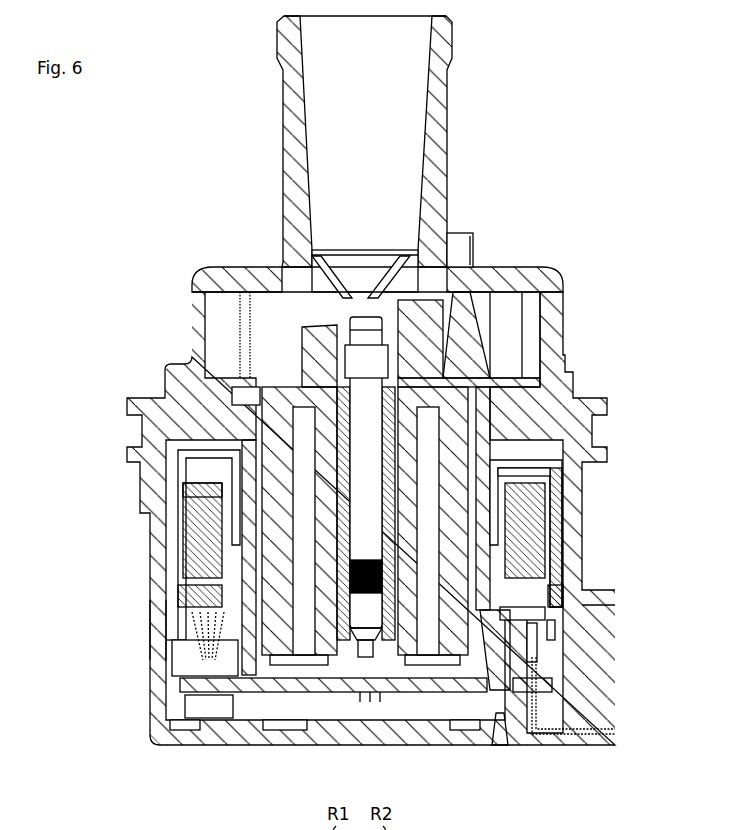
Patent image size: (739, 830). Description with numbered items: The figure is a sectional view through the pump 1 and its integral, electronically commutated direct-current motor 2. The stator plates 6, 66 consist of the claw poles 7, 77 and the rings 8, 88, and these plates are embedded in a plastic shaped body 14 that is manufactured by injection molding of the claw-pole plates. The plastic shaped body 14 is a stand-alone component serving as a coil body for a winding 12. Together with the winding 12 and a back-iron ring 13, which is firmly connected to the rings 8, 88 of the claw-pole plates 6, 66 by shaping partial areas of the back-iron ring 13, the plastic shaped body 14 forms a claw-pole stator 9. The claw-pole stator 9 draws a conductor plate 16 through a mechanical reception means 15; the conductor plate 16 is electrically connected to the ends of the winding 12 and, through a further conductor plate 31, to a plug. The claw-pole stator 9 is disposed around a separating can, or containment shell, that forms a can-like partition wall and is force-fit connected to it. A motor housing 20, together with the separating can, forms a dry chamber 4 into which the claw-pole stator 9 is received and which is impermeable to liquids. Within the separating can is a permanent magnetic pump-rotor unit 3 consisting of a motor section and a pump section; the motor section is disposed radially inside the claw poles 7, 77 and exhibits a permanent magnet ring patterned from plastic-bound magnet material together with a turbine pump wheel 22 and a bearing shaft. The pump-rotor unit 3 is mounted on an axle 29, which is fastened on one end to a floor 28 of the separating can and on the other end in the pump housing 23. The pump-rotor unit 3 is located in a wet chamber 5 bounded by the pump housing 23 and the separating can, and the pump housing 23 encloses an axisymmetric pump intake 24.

The pump 1 is at (510, 82).
The direct-current motor 2 is at (597, 513).
The pump-rotor unit 3 is at (250, 575).
The dry chamber 4 is at (182, 650).
The wet chamber 5 is at (473, 567).
The stator plate 6 is at (223, 557).
The claw pole 7 is at (487, 555).
The ring 8 is at (543, 465).
The claw-pole stator 9 is at (168, 533).
The winding 12 is at (202, 503).
The back-iron ring 13 is at (558, 593).
The plastic shaped body 14 is at (210, 587).
The mechanical reception means 15 is at (207, 663).
The conductor plate 16 is at (190, 681).
The motor housing 20 is at (160, 628).
The turbine pump wheel 22 is at (540, 345).
The pump housing 23 is at (529, 253).
The pump intake 24 is at (437, 122).
The floor 28 is at (293, 670).
The axle 29 is at (365, 452).
The conductor plate 31 is at (568, 735).
The stator plate 66 is at (218, 518).
The claw pole 77 is at (498, 520).
The ring 88 is at (540, 472).